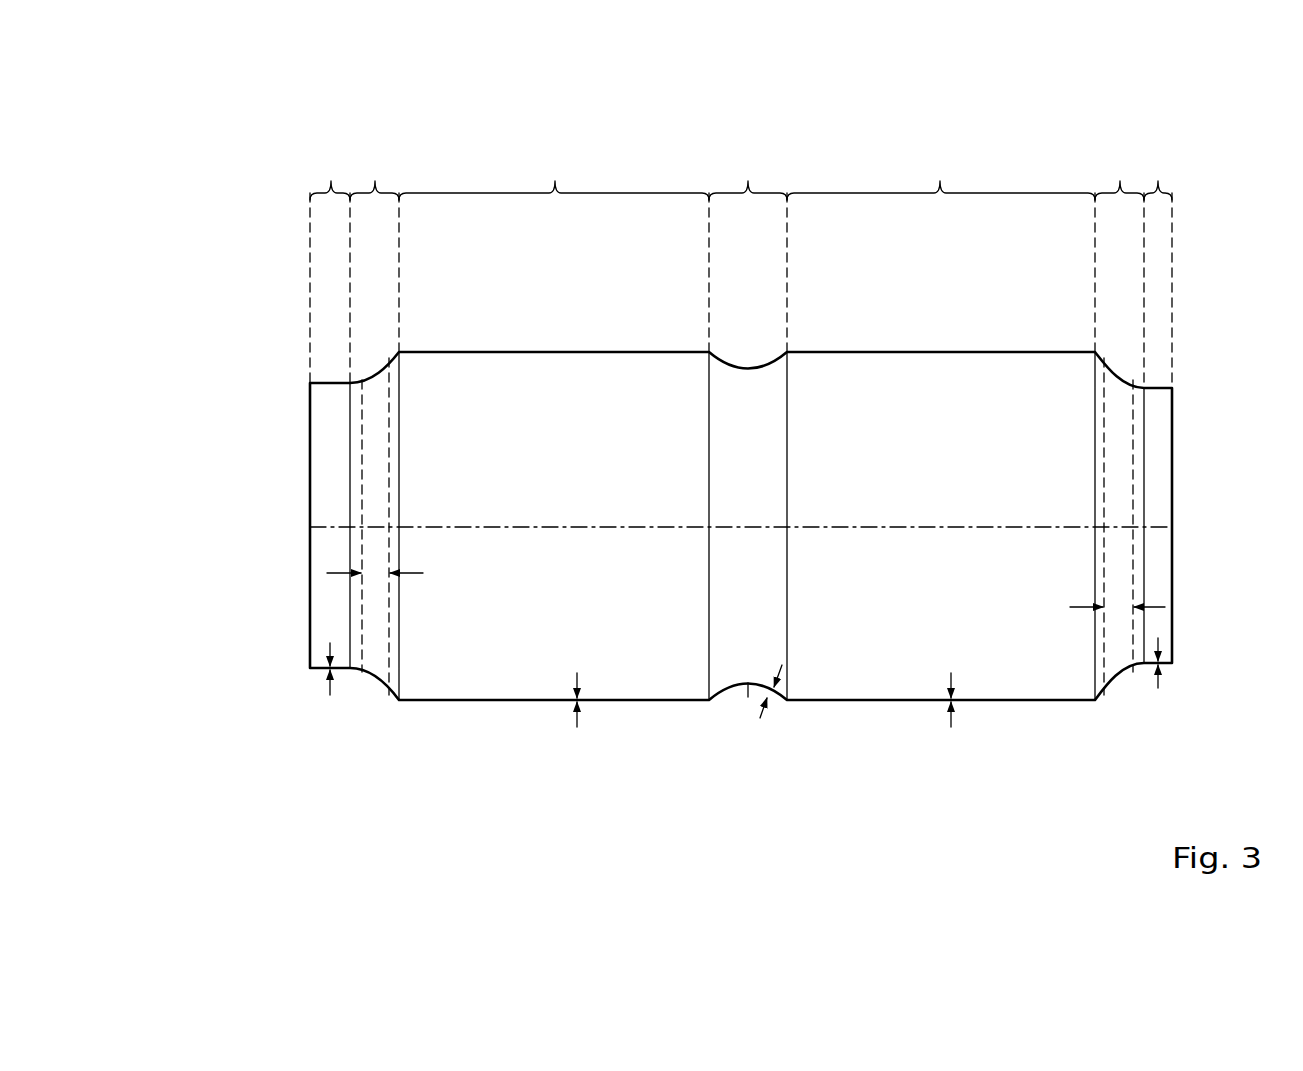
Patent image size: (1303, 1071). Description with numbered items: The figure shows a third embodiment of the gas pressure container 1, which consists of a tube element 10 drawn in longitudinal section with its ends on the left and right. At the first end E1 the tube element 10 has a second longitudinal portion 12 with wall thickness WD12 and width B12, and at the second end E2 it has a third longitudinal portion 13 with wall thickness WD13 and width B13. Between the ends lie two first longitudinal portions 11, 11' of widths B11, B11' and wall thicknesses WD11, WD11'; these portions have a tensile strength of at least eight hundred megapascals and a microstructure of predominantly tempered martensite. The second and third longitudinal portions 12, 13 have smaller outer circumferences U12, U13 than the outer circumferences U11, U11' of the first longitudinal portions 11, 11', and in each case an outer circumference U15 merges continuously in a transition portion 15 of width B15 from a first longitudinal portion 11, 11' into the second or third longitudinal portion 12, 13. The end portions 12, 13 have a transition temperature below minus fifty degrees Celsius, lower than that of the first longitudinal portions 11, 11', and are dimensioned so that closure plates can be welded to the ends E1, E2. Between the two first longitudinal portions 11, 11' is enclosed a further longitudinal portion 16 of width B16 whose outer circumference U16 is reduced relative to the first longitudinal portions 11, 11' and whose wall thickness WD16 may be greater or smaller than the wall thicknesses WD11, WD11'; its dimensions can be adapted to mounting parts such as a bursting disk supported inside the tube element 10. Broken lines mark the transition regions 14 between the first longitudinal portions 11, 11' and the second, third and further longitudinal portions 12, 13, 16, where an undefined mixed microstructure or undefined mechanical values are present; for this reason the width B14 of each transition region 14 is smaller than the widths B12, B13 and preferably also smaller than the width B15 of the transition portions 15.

The gas pressure container 1 is at (844, 154).
The tube element 10 is at (822, 706).
The first longitudinal portion 11 is at (554, 579).
The first longitudinal portion 11' is at (941, 579).
The second longitudinal portion 12 is at (333, 416).
The third longitudinal portion 13 is at (1160, 462).
The transition region 14 is at (378, 503).
The transition portion 15 is at (400, 627).
The further longitudinal portion 16 is at (732, 440).
The width of first longitudinal portion B11 is at (554, 173).
The width of first longitudinal portion B11' is at (941, 173).
The width of second longitudinal portion B12 is at (330, 173).
The width of third longitudinal portion B13 is at (1162, 173).
The width of transition region B14 is at (423, 573).
The width of transition portion B15 is at (747, 173).
The width of further longitudinal portion B16 is at (748, 173).
The first end E1 is at (274, 542).
The second end E2 is at (1219, 542).
The outer circumference of first longitudinal portion U11 is at (554, 771).
The outer circumference of first longitudinal portion U11' is at (941, 771).
The outer circumference of second longitudinal portion U12 is at (331, 380).
The outer circumference of third longitudinal portion U13 is at (1156, 386).
The outer circumference of transition portion U15 is at (355, 380).
The outer circumference of further longitudinal portion U16 is at (745, 684).
The wall thickness of first longitudinal portion WD11 is at (583, 717).
The wall thickness of first longitudinal portion WD11' is at (958, 717).
The wall thickness of second longitudinal portion WD12 is at (328, 690).
The wall thickness of third longitudinal portion WD13 is at (1158, 686).
The wall thickness of further longitudinal portion WD16 is at (759, 706).